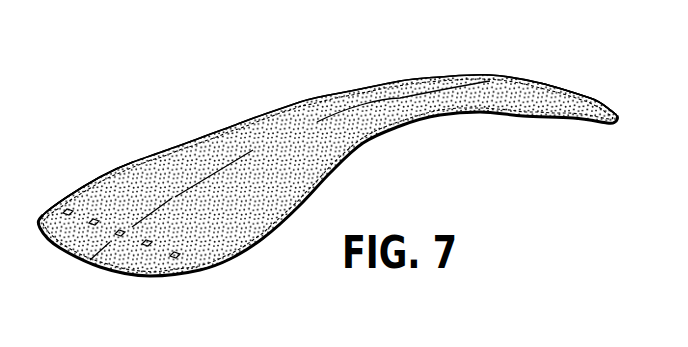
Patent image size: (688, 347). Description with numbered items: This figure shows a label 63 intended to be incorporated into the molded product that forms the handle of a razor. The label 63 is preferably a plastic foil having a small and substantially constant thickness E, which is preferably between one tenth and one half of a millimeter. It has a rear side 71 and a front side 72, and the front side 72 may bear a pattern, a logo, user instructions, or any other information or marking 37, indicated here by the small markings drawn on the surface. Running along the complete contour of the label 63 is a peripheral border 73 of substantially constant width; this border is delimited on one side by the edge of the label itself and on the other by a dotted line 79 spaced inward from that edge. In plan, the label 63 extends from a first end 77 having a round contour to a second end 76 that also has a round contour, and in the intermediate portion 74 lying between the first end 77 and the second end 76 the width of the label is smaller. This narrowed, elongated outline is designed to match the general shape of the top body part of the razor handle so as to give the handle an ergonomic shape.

The label 63 is at (606, 83).
The rear side 71 is at (523, 130).
The front side 72 is at (523, 80).
The peripheral border 73 is at (215, 130).
The intermediate portion 74 is at (318, 99).
The second end 76 is at (63, 195).
The first end 77 is at (557, 88).
The dotted line 79 is at (250, 115).
The marking 37 is at (118, 230).
The thickness E is at (225, 222).